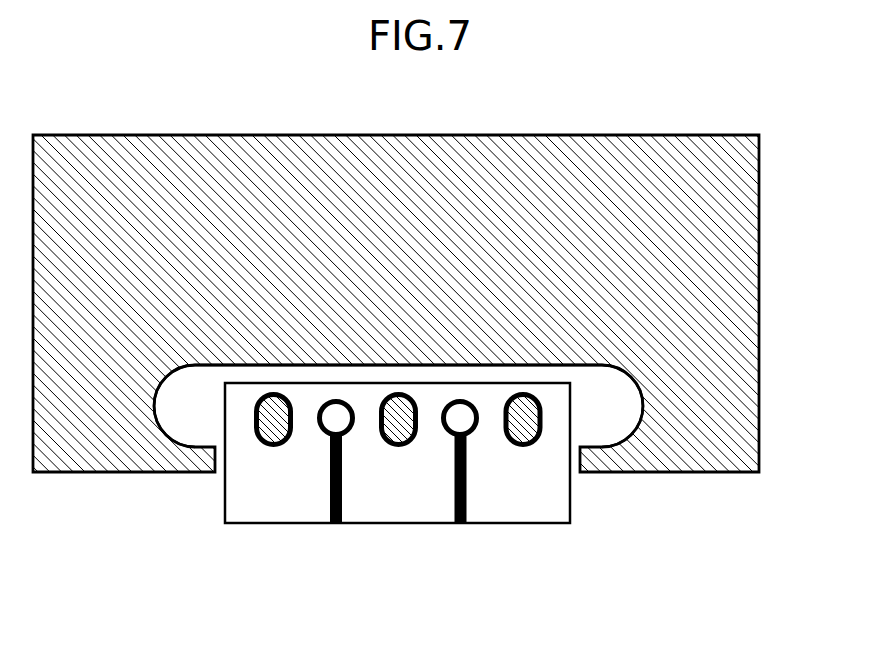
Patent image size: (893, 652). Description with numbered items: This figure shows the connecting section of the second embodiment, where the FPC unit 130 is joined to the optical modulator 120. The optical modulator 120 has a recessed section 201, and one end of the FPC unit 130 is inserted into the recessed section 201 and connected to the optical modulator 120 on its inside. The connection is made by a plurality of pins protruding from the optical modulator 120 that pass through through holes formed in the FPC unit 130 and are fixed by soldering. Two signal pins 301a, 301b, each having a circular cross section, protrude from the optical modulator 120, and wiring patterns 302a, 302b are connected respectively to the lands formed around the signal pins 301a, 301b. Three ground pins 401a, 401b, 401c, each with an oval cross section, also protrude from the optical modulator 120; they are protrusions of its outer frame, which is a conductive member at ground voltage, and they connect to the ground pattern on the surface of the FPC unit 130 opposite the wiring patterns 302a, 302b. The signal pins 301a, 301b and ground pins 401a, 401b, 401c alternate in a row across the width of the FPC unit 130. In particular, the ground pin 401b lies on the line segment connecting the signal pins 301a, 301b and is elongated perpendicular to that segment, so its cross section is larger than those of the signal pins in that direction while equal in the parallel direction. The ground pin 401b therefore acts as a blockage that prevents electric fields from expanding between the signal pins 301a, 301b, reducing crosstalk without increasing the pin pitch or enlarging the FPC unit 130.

The optical modulator 120 is at (687, 135).
The recessed section 201 is at (616, 409).
The FPC unit 130 is at (572, 488).
The signal pin 301a is at (330, 424).
The signal pin 301b is at (467, 424).
The wiring pattern 302a is at (336, 524).
The wiring pattern 302b is at (460, 524).
The ground pin 401a is at (275, 447).
The ground pin 401b is at (398, 447).
The ground pin 401c is at (529, 447).